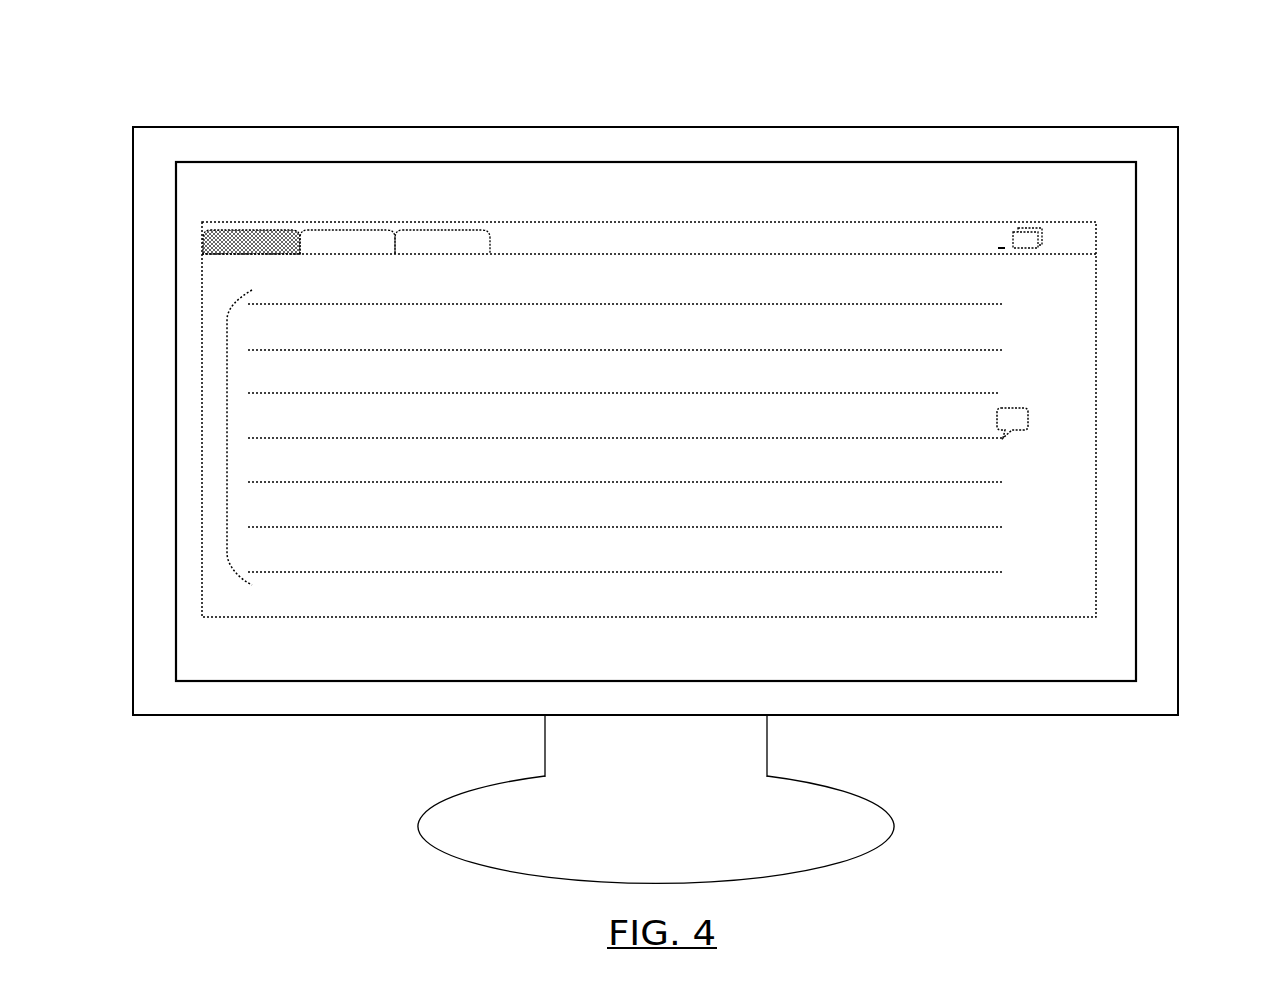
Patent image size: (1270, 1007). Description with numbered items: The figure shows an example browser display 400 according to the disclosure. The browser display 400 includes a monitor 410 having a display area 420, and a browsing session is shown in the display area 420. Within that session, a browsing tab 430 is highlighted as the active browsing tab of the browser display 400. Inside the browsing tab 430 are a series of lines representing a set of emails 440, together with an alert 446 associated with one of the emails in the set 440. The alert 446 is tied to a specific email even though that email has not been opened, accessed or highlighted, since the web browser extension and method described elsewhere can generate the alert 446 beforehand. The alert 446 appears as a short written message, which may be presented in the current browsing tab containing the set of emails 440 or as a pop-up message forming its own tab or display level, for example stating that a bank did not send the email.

The browser display 400 is at (152, 85).
The monitor 410 is at (1179, 127).
The display area 420 is at (1105, 188).
The browsing tab 430 is at (202, 222).
The set of emails 440 is at (227, 438).
The alert 446 is at (1029, 423).